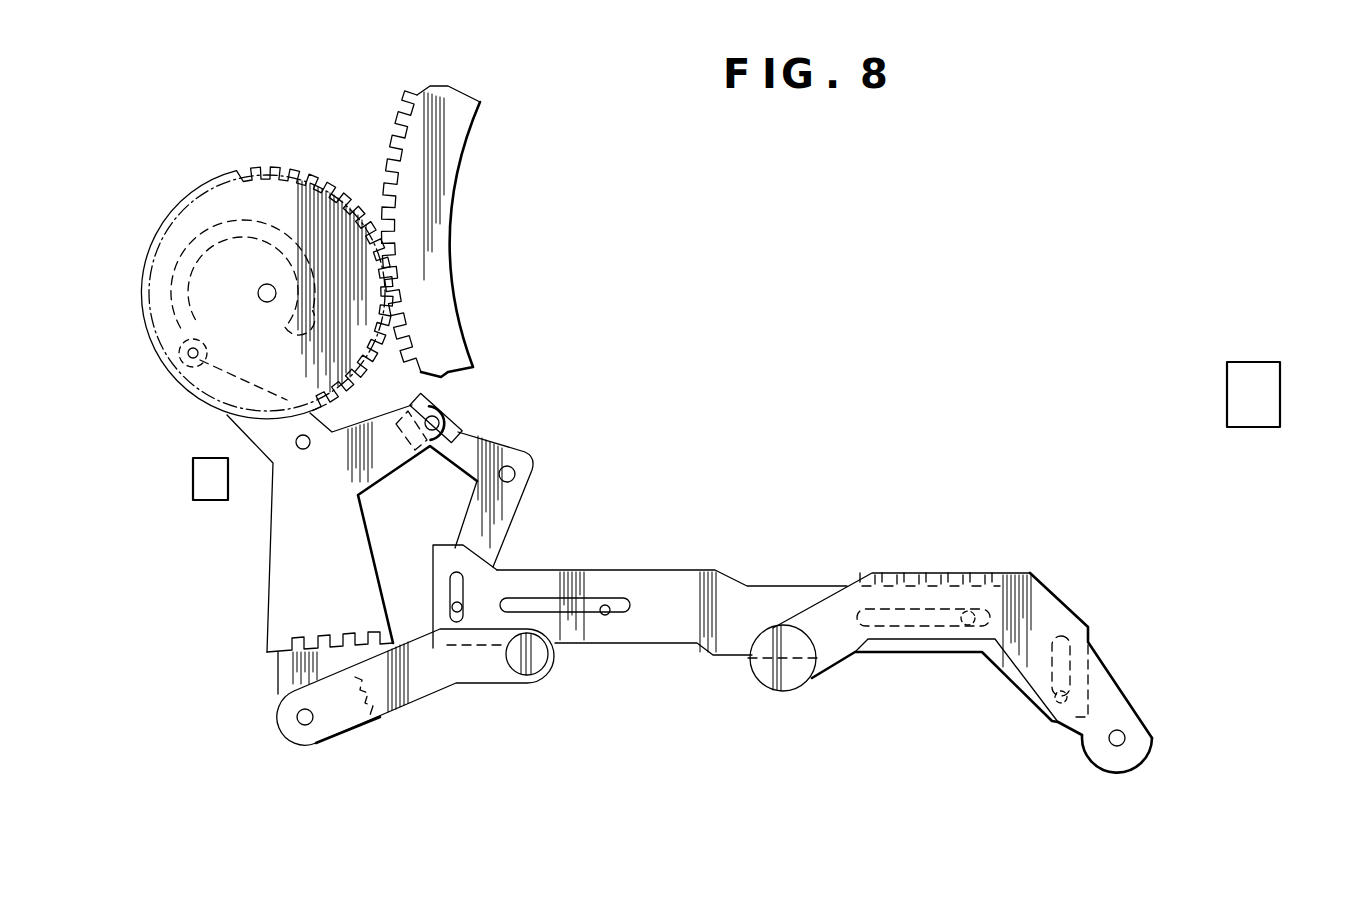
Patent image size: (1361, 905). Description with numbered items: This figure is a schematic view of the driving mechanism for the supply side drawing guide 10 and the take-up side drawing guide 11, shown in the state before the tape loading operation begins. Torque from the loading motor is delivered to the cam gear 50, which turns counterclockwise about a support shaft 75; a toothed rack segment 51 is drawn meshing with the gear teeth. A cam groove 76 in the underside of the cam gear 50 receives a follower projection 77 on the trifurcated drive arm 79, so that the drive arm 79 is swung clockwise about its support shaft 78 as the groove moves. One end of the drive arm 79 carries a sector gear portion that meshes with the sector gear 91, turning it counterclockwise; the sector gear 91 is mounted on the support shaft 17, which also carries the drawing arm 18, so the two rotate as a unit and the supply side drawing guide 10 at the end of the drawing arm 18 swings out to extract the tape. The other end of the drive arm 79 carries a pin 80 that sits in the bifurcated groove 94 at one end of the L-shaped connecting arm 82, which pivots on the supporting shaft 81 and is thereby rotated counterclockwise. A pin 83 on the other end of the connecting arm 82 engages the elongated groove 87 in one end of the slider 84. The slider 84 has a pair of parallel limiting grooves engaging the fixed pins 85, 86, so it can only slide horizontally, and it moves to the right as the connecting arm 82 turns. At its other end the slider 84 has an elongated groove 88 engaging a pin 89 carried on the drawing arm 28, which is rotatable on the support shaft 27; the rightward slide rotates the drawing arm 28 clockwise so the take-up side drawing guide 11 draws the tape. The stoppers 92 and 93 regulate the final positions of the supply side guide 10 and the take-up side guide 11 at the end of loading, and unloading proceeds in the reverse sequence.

The cam gear 50 is at (290, 186).
The curved rack 51 is at (455, 133).
The support shaft 75 is at (257, 293).
The cam groove 76 is at (320, 302).
The follower projection 77 is at (190, 366).
The support shaft 78 is at (303, 450).
The drive arm 79 is at (390, 462).
The pin 80 is at (436, 415).
The bifurcated groove 94 is at (455, 438).
The supporting shaft 81 is at (512, 470).
The connecting arm 82 is at (540, 510).
The elongated groove 87 is at (488, 565).
The slider 84 is at (693, 580).
The drawing arm 28 is at (1043, 613).
The support shaft 27 is at (1127, 735).
The fixed pin 86 is at (965, 622).
The elongated groove 88 is at (1077, 663).
The pin 89 is at (1060, 695).
The fixed pin 85 is at (605, 617).
The pin 83 is at (440, 645).
The take-up side drawing guide 11 is at (783, 693).
The drawing arm 18 is at (412, 693).
The supply side drawing guide 10 is at (528, 676).
The support shaft 17 is at (305, 726).
The sector gear 91 is at (283, 677).
The stopper 92 is at (212, 494).
The stopper 93 is at (1273, 395).